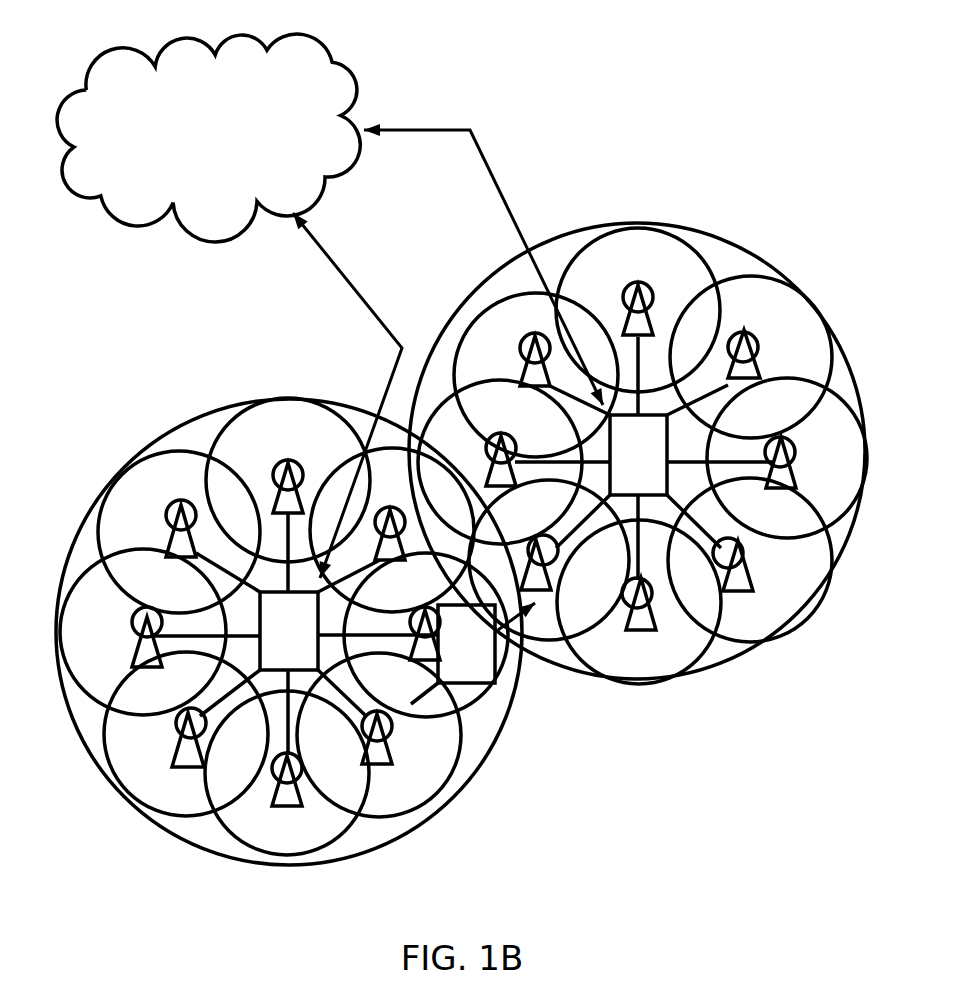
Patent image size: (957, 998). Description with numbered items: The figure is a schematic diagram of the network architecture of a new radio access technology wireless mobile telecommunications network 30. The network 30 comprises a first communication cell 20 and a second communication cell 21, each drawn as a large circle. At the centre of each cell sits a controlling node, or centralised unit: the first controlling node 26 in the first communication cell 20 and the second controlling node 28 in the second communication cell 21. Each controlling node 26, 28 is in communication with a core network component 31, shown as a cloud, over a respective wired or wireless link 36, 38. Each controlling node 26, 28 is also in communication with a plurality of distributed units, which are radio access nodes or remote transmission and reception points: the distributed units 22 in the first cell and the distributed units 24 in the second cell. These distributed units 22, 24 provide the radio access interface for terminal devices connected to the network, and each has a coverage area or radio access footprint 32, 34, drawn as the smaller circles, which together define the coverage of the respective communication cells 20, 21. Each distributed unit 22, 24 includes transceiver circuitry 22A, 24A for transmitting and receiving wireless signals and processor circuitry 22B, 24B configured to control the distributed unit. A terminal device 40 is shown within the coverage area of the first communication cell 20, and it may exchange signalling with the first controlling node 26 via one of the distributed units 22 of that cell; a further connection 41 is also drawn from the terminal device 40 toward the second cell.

The first communication cell 20 is at (190, 412).
The second communication cell 21 is at (643, 222).
The distributed units 22 is at (182, 757).
The transceiver circuitry 22A is at (392, 733).
The processor circuitry 22B is at (393, 757).
The distributed units 24 is at (790, 472).
The transceiver circuitry 24A is at (743, 556).
The processor circuitry 24B is at (745, 578).
The controlling node 26 is at (289, 631).
The controlling node 28 is at (638, 455).
The new RAT wireless mobile telecommunications network 30 is at (633, 102).
The core network component 31 is at (208, 138).
The coverage area 32 is at (82, 563).
The coverage area 34 is at (755, 270).
The wired or wireless link 36 is at (343, 273).
The wired or wireless link 38 is at (430, 130).
The terminal device 40 is at (463, 687).
The link to second cluster 41 is at (537, 610).